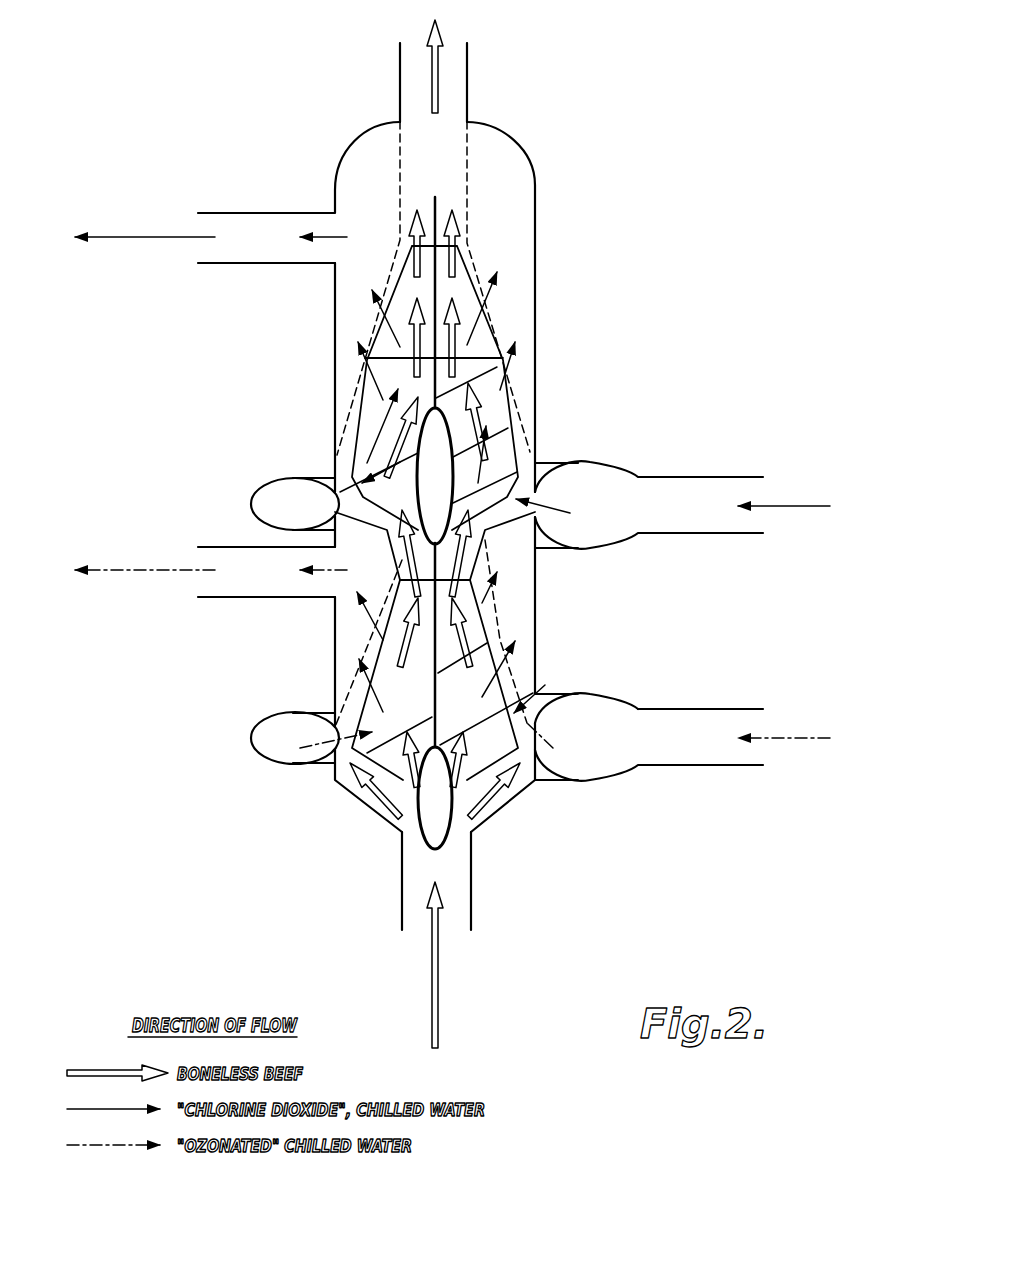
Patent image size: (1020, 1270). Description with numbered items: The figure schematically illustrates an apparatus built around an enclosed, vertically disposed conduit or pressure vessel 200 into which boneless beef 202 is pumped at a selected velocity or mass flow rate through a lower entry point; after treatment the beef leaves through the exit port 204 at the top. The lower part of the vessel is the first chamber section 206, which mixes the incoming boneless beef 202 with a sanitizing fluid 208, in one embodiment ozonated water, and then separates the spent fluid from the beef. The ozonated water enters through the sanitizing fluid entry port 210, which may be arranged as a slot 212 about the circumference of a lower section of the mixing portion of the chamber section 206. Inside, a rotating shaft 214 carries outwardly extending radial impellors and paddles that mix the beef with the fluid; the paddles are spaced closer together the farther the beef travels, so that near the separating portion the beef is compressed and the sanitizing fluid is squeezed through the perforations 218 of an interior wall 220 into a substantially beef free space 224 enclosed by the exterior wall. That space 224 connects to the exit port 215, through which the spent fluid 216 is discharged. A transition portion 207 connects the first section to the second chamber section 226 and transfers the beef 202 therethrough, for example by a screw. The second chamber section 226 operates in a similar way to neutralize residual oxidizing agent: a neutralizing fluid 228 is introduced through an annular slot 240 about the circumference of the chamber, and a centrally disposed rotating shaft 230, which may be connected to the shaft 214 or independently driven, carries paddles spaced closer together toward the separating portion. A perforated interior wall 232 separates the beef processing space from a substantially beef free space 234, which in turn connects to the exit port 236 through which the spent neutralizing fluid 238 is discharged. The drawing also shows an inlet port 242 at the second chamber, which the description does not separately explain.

The pressure vessel 200 is at (535, 310).
The boneless beef 202 is at (430, 966).
The exit port 204 is at (440, 40).
The first chamber section 206 is at (722, 650).
The transition portion 207 is at (480, 543).
The sanitizing fluid 208 is at (778, 738).
The sanitizing fluid entry port 210 is at (673, 709).
The slot 212 is at (283, 745).
The rotating shaft 214 is at (433, 703).
The exit port 215 is at (220, 547).
The spent fluid 216 is at (152, 568).
The perforations 218 is at (500, 630).
The interior wall 220 is at (518, 612).
The space 224 is at (353, 627).
The second chamber section 226 is at (572, 362).
The neutralizing fluid 228 is at (783, 505).
The rotating shaft 230 is at (430, 298).
The interior wall 232 is at (477, 267).
The space 234 is at (500, 183).
The exit port 236 is at (287, 213).
The spent neutralizing fluid 238 is at (128, 237).
The annular slot 240 is at (285, 490).
The upper inlet port 242 is at (668, 477).